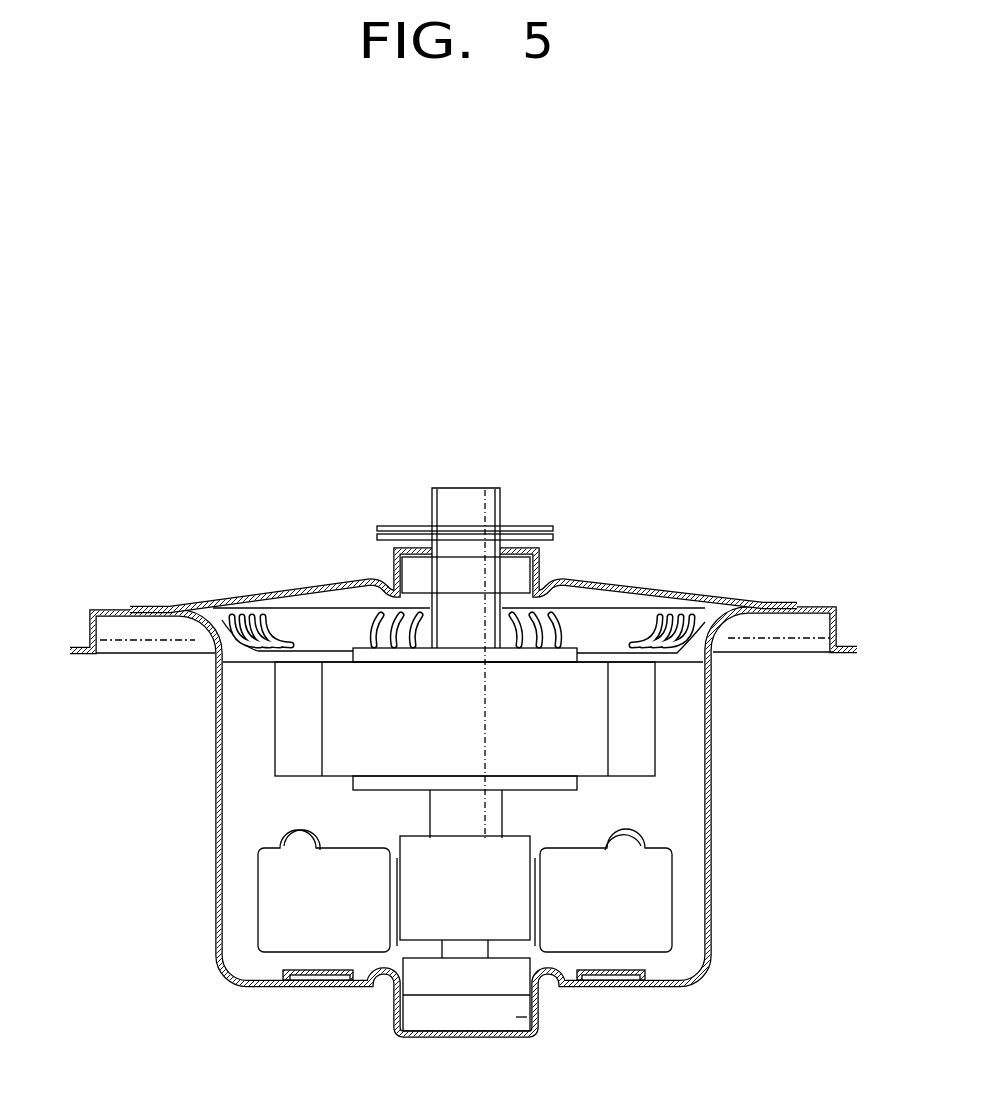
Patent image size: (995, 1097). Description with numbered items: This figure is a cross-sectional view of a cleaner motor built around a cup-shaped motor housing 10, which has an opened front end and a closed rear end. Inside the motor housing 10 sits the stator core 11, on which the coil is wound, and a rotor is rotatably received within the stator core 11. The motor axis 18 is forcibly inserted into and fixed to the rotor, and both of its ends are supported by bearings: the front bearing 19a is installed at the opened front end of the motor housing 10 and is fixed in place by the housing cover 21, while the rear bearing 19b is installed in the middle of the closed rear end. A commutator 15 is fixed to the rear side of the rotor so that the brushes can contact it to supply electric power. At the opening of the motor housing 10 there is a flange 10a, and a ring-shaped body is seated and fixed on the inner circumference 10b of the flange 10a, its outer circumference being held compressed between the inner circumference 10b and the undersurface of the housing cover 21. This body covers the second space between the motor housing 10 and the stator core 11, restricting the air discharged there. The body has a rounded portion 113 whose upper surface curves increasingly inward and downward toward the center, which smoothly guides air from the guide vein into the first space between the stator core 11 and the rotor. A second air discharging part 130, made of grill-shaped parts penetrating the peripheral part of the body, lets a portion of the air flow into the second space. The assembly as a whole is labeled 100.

The motor housing 10 is at (213, 773).
The flange 10a is at (98, 612).
The inner circumference 10b is at (212, 615).
The housing cover 21 is at (273, 588).
The second air discharging part 130 is at (382, 612).
The motor axis 18 is at (487, 490).
The front bearing 19a is at (515, 568).
The rounded portion 113 is at (627, 627).
The stator core 11 is at (335, 717).
The commutator 15 is at (413, 920).
The rear bearing 19b is at (535, 1022).
The motor assembly 100 is at (704, 665).